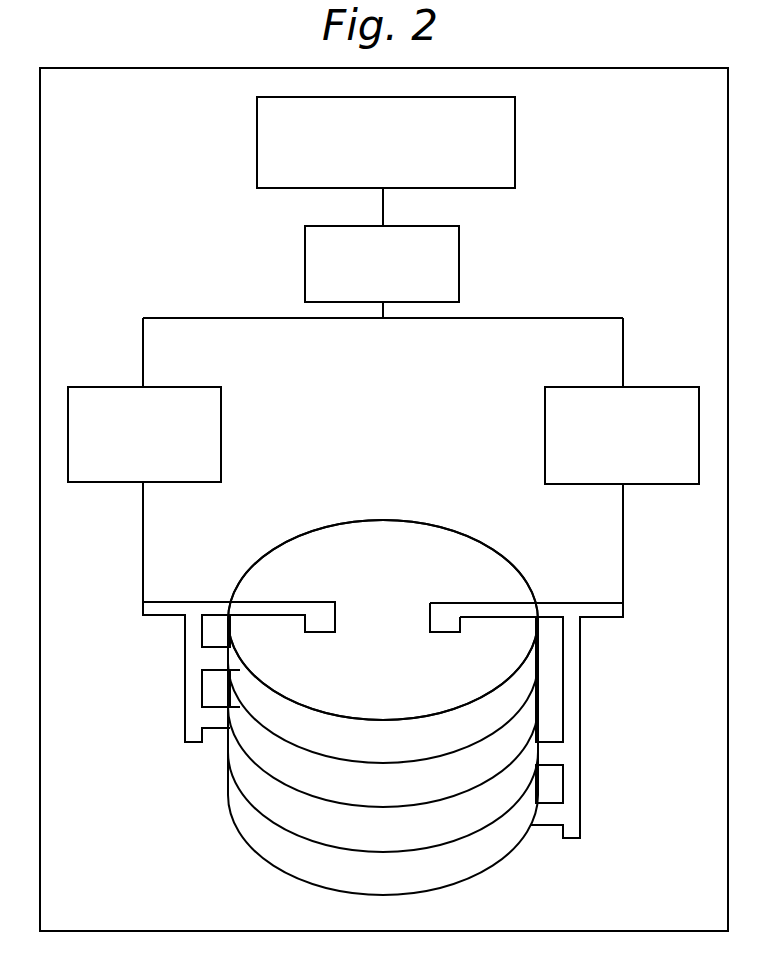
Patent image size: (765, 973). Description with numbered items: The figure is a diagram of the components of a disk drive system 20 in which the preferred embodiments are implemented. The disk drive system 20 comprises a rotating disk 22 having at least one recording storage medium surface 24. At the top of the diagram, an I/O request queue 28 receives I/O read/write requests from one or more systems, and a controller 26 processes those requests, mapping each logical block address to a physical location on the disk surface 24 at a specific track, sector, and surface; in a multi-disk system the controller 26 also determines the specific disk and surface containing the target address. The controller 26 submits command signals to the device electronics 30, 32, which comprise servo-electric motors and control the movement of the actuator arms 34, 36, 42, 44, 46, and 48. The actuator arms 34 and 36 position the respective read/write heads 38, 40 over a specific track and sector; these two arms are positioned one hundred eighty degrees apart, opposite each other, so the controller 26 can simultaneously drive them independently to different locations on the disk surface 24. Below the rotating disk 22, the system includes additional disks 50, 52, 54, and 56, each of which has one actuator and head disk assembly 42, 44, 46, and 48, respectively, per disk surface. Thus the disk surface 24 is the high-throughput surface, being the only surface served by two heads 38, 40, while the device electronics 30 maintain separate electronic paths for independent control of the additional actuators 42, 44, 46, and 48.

The disk drive system 20 is at (192, 68).
The rotating disk 22 is at (287, 540).
The recording storage medium surface 24 is at (452, 557).
The controller 26 is at (304, 263).
The I/O request queue 28 is at (255, 139).
The device electronics 30 is at (90, 387).
The device electronics 32 is at (665, 387).
The actuator arm 34 is at (160, 617).
The actuator arm 36 is at (605, 618).
The read/write head 38 is at (320, 633).
The read/write head 40 is at (444, 633).
The actuator and head disk assembly 42 is at (218, 680).
The actuator and head disk assembly 44 is at (218, 737).
The actuator and head disk assembly 46 is at (552, 730).
The actuator and head disk assembly 48 is at (545, 828).
The additional disk 50 is at (398, 757).
The additional disk 52 is at (398, 798).
The additional disk 54 is at (398, 840).
The additional disk 56 is at (398, 883).